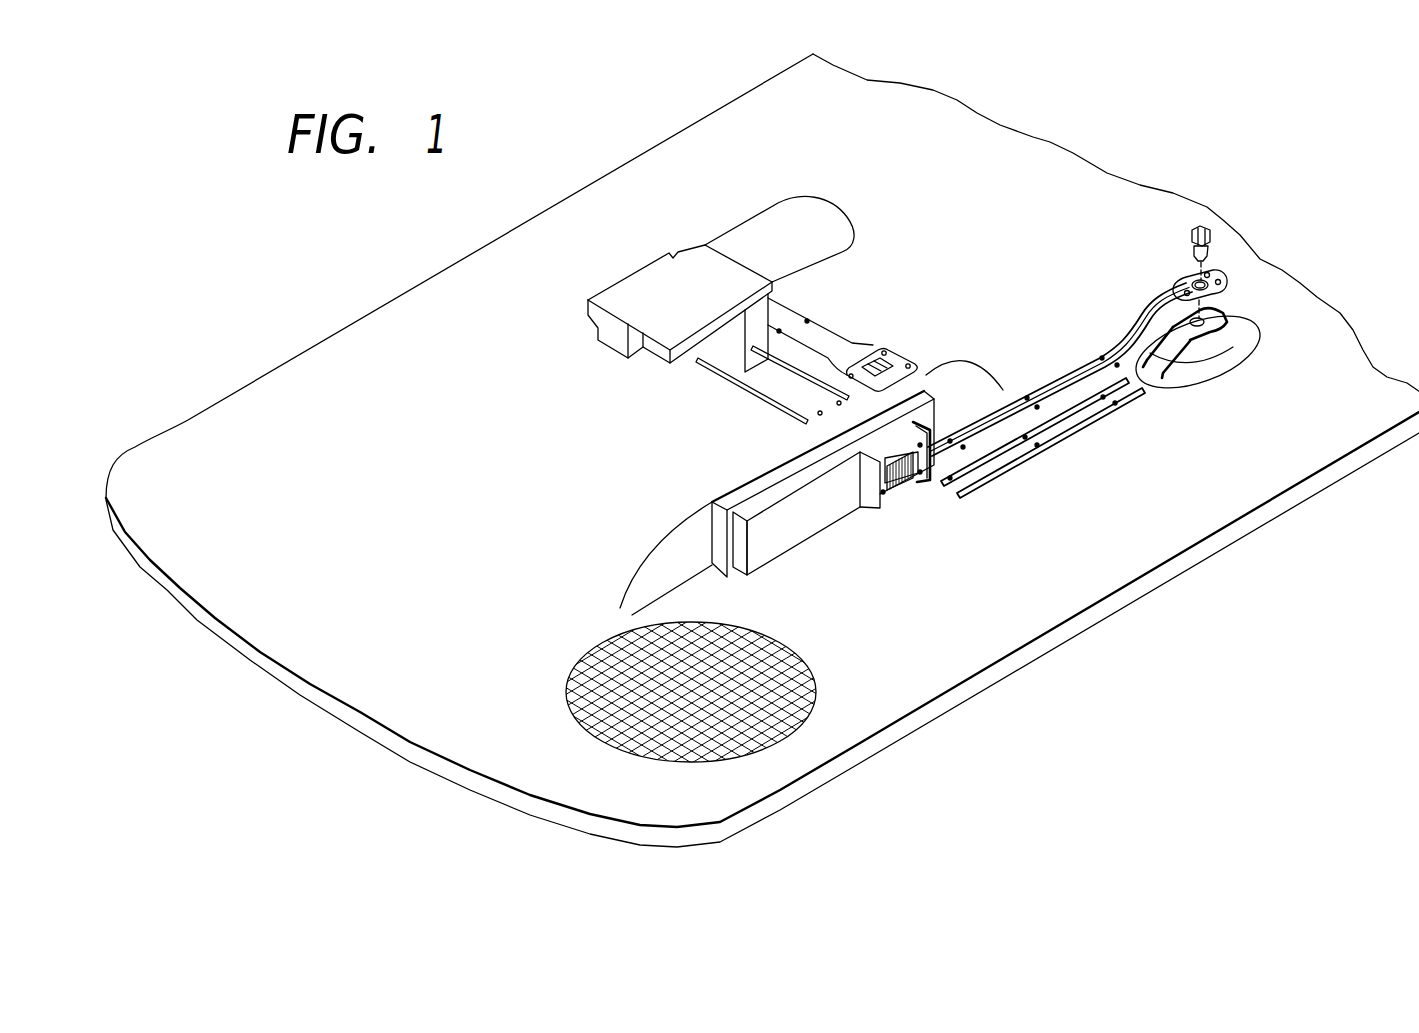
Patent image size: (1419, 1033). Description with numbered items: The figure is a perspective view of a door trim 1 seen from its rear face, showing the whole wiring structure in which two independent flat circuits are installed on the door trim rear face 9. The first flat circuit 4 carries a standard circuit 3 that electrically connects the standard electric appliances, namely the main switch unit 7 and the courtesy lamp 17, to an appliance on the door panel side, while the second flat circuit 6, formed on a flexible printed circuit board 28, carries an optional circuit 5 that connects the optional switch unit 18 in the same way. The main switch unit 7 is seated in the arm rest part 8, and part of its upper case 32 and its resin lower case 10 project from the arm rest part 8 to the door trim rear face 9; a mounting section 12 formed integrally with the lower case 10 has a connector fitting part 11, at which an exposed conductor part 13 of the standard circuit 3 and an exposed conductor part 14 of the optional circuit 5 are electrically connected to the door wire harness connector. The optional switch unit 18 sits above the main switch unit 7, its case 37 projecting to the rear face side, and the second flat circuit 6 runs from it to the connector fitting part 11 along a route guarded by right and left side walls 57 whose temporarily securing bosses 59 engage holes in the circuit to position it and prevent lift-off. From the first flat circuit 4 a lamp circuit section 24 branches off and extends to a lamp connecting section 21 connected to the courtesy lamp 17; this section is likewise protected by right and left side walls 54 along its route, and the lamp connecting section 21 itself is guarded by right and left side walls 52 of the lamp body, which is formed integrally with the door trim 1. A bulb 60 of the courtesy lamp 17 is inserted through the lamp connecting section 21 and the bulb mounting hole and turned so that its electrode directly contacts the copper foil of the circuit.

The door trim 1 is at (963, 120).
The door trim rear face 9 is at (861, 95).
The optional switch unit 18 is at (662, 272).
The case 37 is at (699, 275).
The flexible printed circuit board 28 is at (820, 328).
The second flat circuit 6 is at (910, 307).
The optional circuit 5 is at (910, 327).
The exposed conductor part 14 is at (892, 353).
The right and left side walls 57 is at (718, 370).
The temporarily securing bosses 59 is at (790, 410).
The mounting section 12 is at (875, 465).
The upper case 32 is at (725, 500).
The arm rest part 8 is at (663, 557).
The lower case 10 is at (757, 553).
The main switch unit 7 is at (819, 493).
The first flat circuit 4 is at (1032, 442).
The standard circuit 3 is at (912, 492).
The exposed conductor part 13 is at (905, 487).
The connector fitting part 11 is at (940, 458).
The right and left side walls 54 is at (1078, 428).
The lamp circuit section 24 is at (1080, 354).
The lamp connecting section 21 is at (1238, 263).
The bulb 60 is at (1176, 253).
The courtesy lamp 17 is at (1227, 319).
The right and left side walls 52 is at (1183, 352).